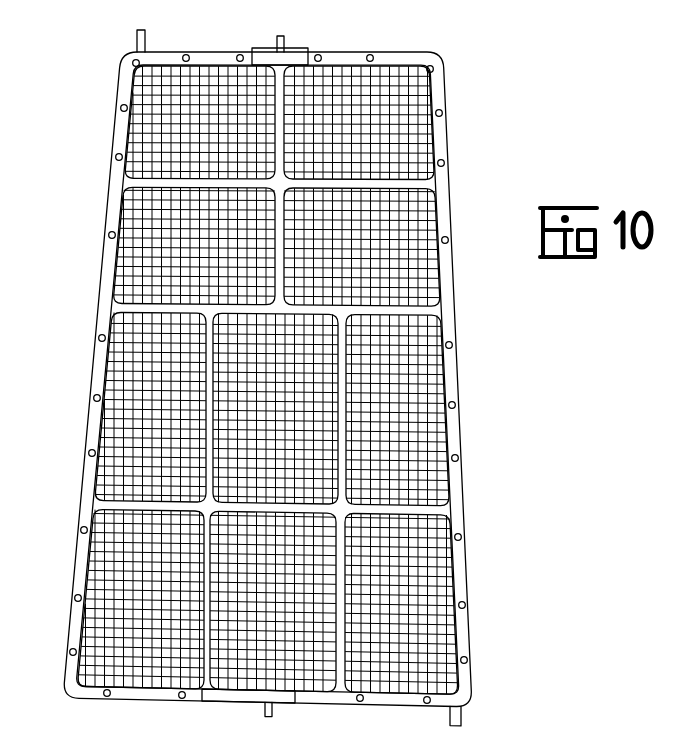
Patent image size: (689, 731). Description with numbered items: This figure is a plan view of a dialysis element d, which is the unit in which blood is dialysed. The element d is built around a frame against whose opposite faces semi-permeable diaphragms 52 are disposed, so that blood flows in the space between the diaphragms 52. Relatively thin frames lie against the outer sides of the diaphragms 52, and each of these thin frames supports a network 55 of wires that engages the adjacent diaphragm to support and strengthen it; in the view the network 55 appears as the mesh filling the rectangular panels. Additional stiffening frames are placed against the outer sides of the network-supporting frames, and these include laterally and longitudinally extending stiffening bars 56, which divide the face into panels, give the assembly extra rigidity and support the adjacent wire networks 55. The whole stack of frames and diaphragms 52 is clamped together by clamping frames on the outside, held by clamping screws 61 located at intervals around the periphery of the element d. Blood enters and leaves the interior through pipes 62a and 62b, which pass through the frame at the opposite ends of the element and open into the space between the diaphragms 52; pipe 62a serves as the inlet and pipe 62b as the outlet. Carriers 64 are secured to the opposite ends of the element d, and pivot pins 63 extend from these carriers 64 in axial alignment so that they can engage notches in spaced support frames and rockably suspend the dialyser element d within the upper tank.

The dialysis element d is at (448, 135).
The diffusion or semi-permeable diaphragm 52 is at (241, 398).
The network of wires 55 is at (114, 599).
The stiffening bar 56 is at (241, 398).
The clamping screw 61 is at (457, 405).
The inlet pipe 62a is at (537, 725).
The outlet pipe 62b is at (137, 33).
The pivot pin 63 is at (277, 41).
The carrier 64 is at (292, 52).